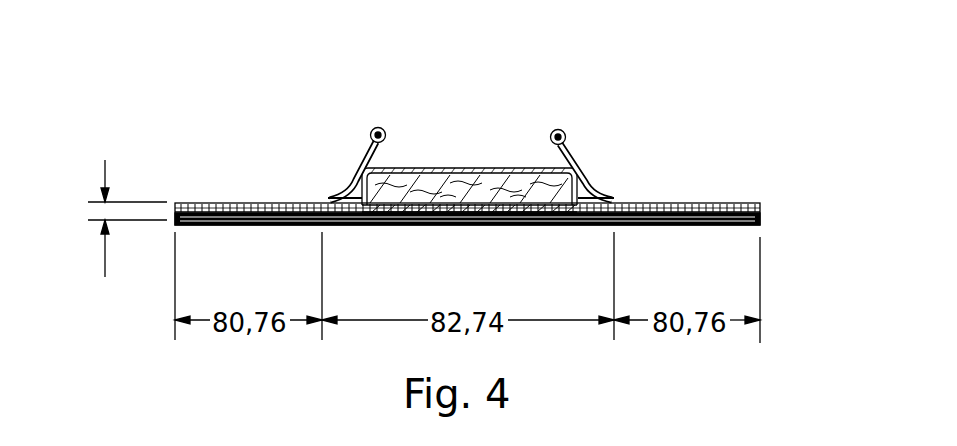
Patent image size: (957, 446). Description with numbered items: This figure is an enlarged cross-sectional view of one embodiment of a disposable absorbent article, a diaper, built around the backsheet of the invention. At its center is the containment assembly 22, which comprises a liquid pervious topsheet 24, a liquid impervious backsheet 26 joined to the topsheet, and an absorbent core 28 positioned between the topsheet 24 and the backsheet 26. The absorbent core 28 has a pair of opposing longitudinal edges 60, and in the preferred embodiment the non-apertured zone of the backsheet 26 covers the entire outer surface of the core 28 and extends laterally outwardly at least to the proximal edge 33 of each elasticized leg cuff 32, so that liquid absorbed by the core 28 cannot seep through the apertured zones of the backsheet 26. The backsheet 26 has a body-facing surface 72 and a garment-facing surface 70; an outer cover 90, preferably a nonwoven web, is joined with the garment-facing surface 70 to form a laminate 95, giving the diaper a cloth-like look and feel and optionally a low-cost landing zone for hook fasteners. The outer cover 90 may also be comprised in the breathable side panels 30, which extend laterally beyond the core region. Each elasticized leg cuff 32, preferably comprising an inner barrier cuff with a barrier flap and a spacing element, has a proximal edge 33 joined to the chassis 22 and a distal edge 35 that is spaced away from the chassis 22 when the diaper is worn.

The containment assembly 22 is at (432, 143).
The liquid pervious topsheet 24 is at (522, 170).
The liquid impervious backsheet 26 is at (763, 215).
The absorbent core 28 is at (458, 177).
The side panels 30 is at (207, 186).
The elasticized leg cuff 32 is at (370, 137).
The proximal edge 33 is at (307, 198).
The distal edge 35 is at (384, 128).
The longitudinal edges 60 is at (342, 187).
The garment-facing surface 70 is at (442, 224).
The body-facing surface 72 is at (538, 229).
The outer cover 90 is at (408, 224).
The laminate 95 is at (105, 258).